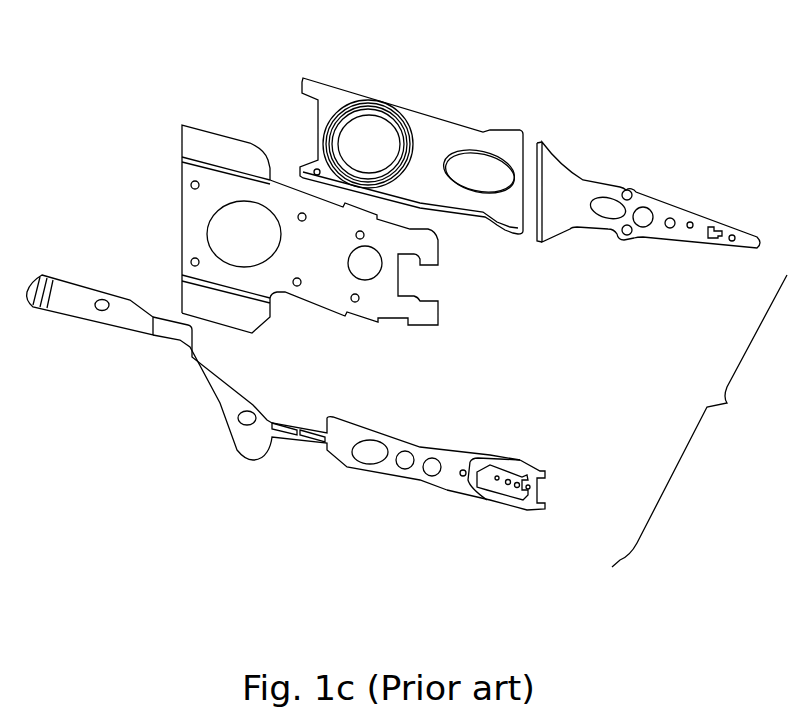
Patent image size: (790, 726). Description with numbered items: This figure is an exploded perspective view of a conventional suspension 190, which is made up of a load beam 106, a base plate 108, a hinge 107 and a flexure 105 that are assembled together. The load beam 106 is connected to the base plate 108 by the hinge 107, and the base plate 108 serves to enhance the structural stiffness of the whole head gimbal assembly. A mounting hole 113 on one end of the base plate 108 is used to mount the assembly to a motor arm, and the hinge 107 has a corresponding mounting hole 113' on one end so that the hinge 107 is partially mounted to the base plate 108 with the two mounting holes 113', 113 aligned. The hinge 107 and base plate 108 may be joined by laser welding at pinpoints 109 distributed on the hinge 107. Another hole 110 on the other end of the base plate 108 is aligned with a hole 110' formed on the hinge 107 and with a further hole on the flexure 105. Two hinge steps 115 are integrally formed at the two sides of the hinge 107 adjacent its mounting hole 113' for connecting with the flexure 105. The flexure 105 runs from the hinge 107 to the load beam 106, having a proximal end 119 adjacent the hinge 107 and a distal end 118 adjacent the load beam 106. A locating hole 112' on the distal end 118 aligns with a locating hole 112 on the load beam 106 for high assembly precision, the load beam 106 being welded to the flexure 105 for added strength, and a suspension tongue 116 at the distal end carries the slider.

The flexure 105 is at (343, 444).
The load beam 106 is at (567, 187).
The hinge 107 is at (377, 302).
The base plate 108 is at (437, 140).
The pinpoints 109 is at (192, 184).
The hole 110 is at (503, 118).
The hole 110' is at (452, 269).
The locating hole 112 is at (679, 164).
The locating hole 112' is at (376, 506).
The mounting hole 113 is at (371, 96).
The mounting hole 113' is at (162, 209).
The hinge steps 115 is at (190, 135).
The suspension tongue 116 is at (509, 482).
The distal end 118 is at (484, 497).
The proximal end 119 is at (80, 298).
The suspension 190 is at (699, 421).